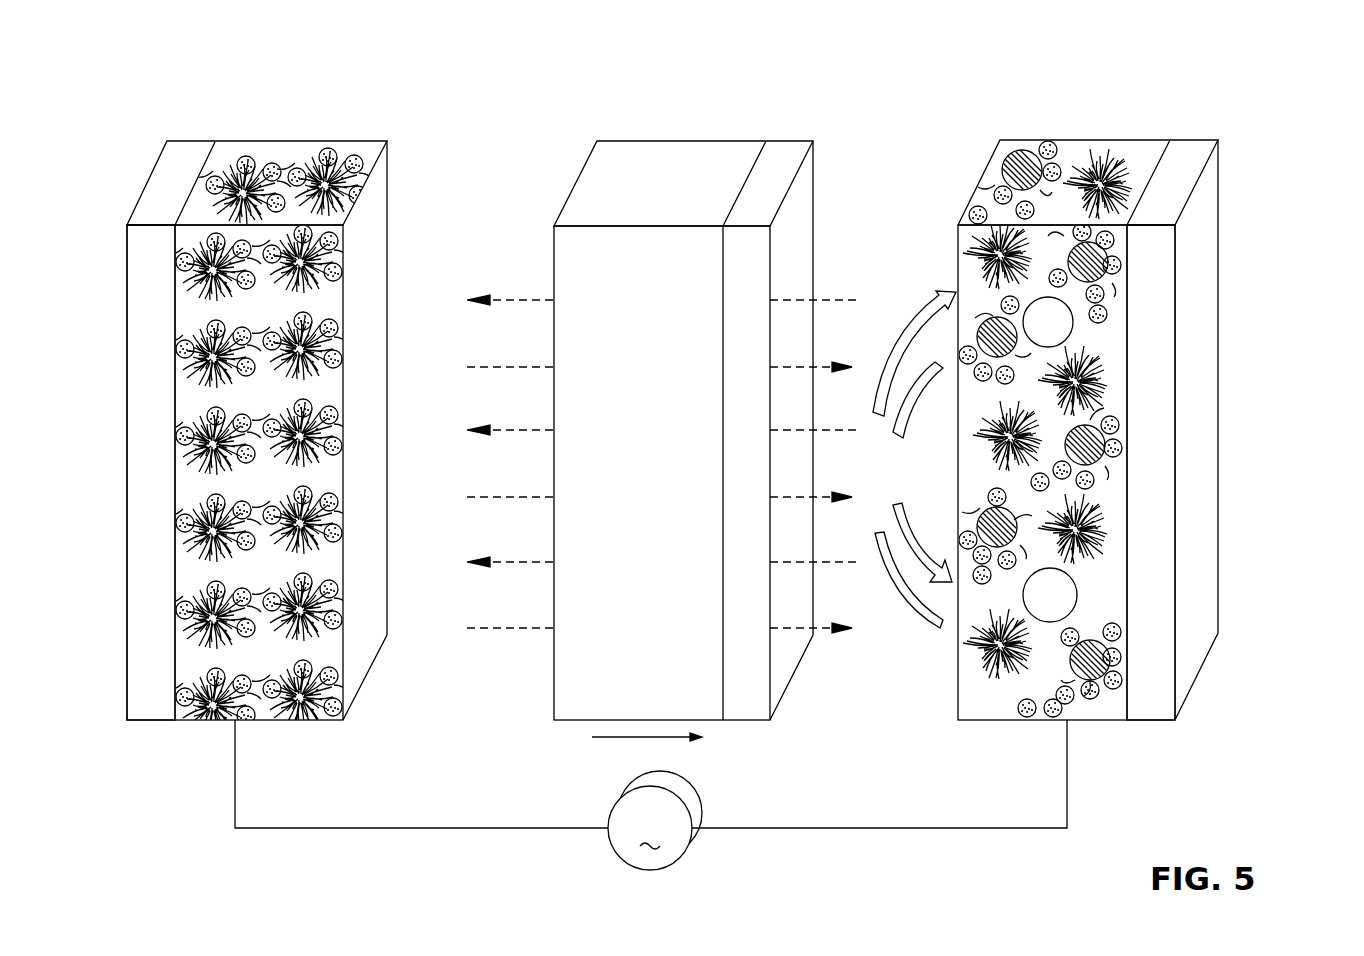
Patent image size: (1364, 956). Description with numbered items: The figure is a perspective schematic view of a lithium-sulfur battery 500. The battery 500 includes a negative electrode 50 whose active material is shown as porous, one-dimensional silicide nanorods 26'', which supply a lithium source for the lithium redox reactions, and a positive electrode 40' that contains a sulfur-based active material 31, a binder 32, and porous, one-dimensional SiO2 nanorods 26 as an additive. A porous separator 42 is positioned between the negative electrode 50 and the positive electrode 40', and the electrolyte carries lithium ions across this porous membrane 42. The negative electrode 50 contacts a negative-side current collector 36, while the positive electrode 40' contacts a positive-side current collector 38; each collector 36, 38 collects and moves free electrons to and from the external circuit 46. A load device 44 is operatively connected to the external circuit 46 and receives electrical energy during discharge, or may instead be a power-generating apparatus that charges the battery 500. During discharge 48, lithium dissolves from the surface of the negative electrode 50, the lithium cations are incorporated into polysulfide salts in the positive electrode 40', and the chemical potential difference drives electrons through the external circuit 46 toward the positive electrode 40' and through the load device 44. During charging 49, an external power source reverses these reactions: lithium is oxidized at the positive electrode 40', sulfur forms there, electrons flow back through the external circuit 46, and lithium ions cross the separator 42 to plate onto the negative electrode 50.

The lithium-sulfur battery 500 is at (1246, 80).
The negative electrode 50 is at (219, 410).
The negative-side current collector 36 is at (150, 566).
The porous, one-dimensional silicide nanorods 26'' is at (219, 442).
The porous separator 42 is at (690, 128).
The positive electrode 40' is at (1128, 440).
The positive-side current collector 38 is at (1193, 257).
The porous, one-dimensional SiO2 nanorods 26 is at (1113, 429).
The sulfur-based active material 31 is at (1100, 660).
The binder 32 is at (1107, 690).
The load device 44 is at (655, 820).
The external circuit 46 is at (949, 828).
The battery discharge 48 is at (822, 628).
The battery charging 49 is at (518, 562).